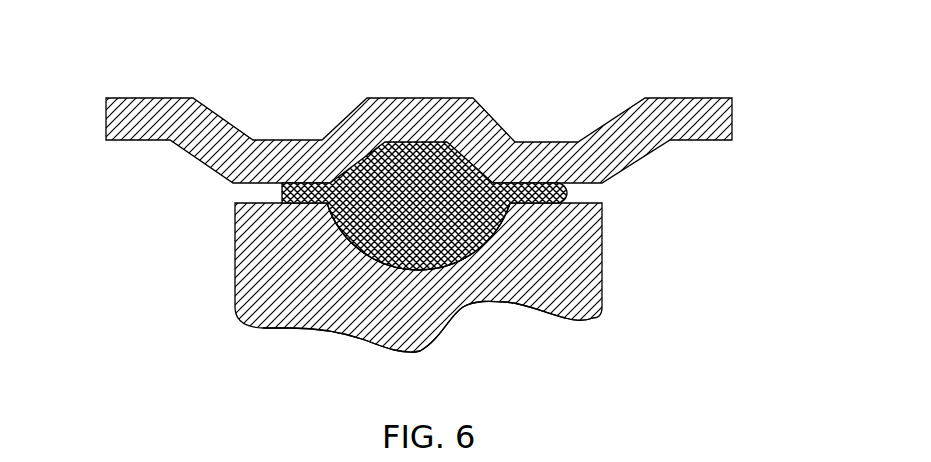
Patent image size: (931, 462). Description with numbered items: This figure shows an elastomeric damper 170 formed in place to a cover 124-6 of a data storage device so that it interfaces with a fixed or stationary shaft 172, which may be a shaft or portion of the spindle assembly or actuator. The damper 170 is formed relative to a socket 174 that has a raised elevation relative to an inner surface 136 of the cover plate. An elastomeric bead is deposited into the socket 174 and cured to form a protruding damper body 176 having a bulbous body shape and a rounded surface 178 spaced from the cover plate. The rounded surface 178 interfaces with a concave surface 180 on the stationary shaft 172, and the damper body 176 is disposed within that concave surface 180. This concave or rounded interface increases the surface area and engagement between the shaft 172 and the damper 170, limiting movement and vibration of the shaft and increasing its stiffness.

The cover 124-6 is at (741, 94).
The inner surface of the cover plate 136 is at (149, 141).
The elastomeric damper 170 is at (433, 188).
The socket 174 is at (481, 156).
The stationary shaft 172 is at (603, 295).
The protruding damper body 176 is at (270, 331).
The rounded surface 178 is at (430, 272).
The concave surface 180 is at (340, 232).